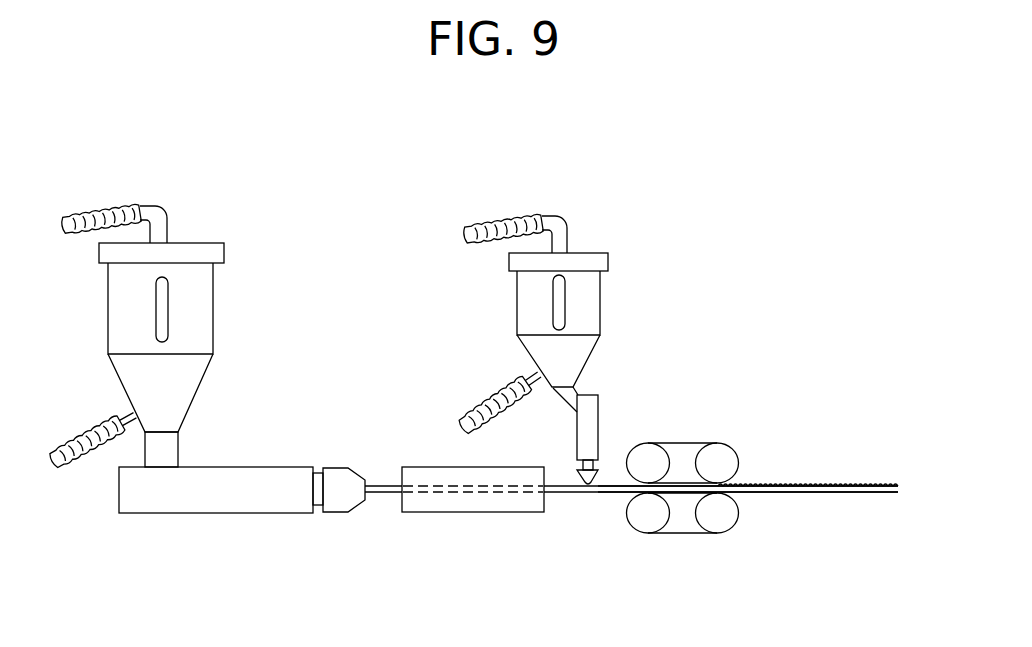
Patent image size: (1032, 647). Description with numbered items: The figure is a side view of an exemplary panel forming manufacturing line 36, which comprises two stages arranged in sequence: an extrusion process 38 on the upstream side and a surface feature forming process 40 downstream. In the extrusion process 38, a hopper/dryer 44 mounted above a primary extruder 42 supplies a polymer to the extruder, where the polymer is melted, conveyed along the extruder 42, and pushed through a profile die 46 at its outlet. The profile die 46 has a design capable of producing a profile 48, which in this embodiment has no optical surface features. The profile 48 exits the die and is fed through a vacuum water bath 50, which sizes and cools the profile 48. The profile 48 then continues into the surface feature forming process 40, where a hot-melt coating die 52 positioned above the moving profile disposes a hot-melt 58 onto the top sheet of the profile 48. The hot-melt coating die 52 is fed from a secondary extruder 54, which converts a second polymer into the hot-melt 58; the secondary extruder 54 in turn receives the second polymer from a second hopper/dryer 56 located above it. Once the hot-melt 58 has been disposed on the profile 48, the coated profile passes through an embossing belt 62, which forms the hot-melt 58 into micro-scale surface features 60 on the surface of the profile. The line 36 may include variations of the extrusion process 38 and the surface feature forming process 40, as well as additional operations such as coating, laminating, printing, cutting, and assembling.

The panel forming manufacturing line 36 is at (377, 262).
The extrusion process 38 is at (575, 556).
The surface feature forming process 40 is at (618, 556).
The primary extruder 42 is at (203, 501).
The hopper/dryer 44 is at (145, 400).
The profile die 46 is at (330, 502).
The profile 48 is at (380, 481).
The vacuum water bath 50 is at (446, 467).
The hot-melt coating die 52 is at (576, 467).
The secondary extruder 54 is at (589, 405).
The second hopper/dryer 56 is at (545, 365).
The hot-melt 58 is at (607, 486).
The micro-scale surface features 60 is at (816, 484).
The embossing belt 62 is at (687, 443).